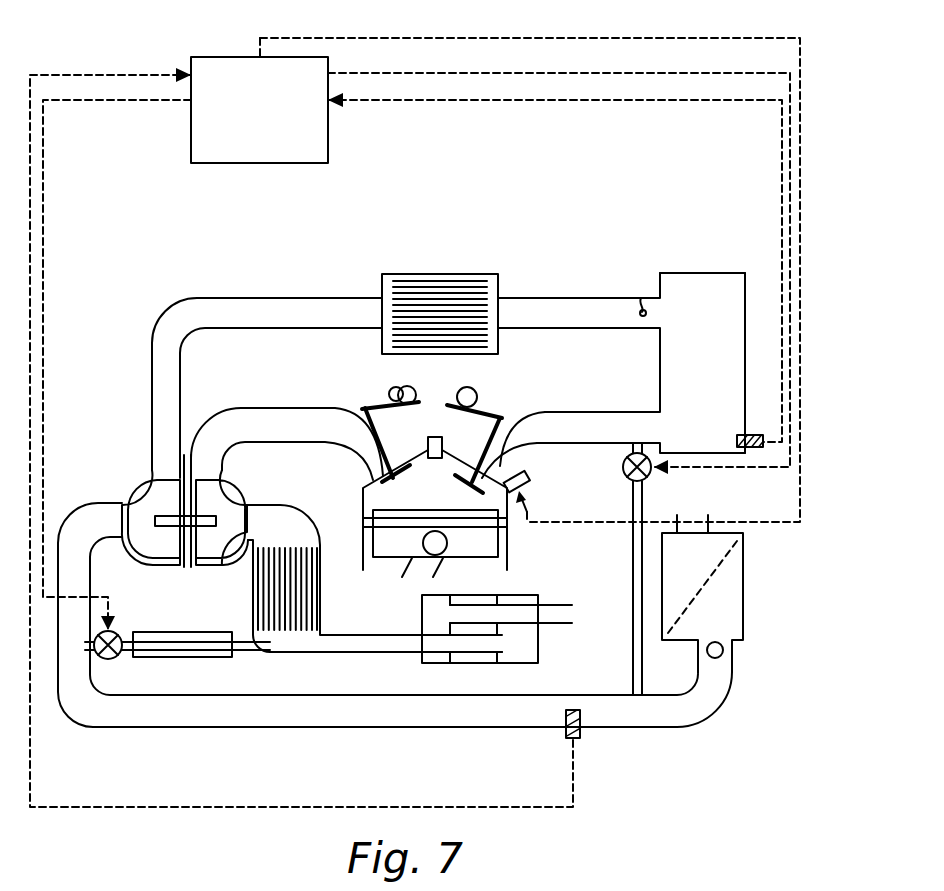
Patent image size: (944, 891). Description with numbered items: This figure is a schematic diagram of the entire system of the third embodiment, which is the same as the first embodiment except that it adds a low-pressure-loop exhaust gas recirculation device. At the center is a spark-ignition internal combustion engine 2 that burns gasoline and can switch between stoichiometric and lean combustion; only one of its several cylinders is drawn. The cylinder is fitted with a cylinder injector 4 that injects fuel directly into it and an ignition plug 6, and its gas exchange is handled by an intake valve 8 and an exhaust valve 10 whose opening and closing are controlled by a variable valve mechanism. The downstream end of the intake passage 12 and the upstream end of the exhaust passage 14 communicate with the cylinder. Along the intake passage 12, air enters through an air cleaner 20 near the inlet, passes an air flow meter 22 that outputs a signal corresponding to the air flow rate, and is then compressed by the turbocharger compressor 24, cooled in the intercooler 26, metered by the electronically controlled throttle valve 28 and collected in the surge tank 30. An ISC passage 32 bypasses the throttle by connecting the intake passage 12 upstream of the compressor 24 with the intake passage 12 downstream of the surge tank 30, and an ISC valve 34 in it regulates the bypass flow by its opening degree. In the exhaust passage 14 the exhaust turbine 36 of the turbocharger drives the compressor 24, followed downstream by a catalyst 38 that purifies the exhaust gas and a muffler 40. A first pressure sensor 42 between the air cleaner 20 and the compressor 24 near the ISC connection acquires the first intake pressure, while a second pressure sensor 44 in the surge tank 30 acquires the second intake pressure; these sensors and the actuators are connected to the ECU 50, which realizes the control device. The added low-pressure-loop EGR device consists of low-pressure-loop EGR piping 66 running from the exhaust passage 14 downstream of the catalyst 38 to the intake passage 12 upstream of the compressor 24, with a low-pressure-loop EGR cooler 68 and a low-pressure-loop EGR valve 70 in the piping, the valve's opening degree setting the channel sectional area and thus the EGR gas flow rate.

The internal combustion engine 2 is at (521, 552).
The cylinder injector 4 is at (530, 480).
The ignition plug 6 is at (442, 446).
The intake valve 8 is at (512, 443).
The exhaust valve 10 is at (383, 432).
The intake passage 12 is at (312, 298).
The exhaust passage 14 is at (327, 443).
The air cleaner 20 is at (743, 590).
The air flow meter 22 is at (723, 650).
The compressor 24 is at (128, 548).
The intercooler 26 is at (440, 274).
The throttle valve 28 is at (641, 298).
The surge tank 30 is at (708, 273).
The ISC passage 32 is at (643, 497).
The ISC valve 34 is at (626, 480).
The exhaust turbine 36 is at (205, 553).
The catalyst 38 is at (318, 592).
The muffler 40 is at (538, 648).
The first pressure sensor 42 is at (580, 735).
The second pressure sensor 44 is at (747, 435).
The ECU 50 is at (218, 57).
The low-pressure-loop EGR piping 66 is at (248, 655).
The low-pressure-loop EGR cooler 68 is at (178, 633).
The low-pressure-loop EGR valve 70 is at (118, 655).